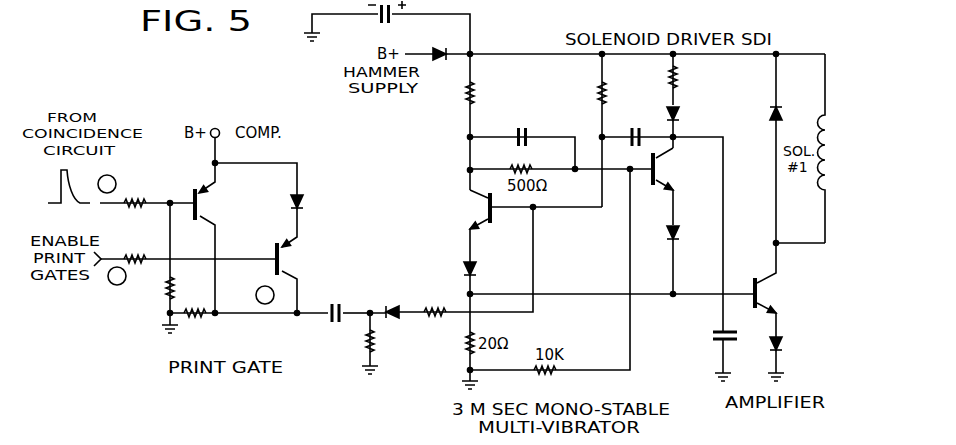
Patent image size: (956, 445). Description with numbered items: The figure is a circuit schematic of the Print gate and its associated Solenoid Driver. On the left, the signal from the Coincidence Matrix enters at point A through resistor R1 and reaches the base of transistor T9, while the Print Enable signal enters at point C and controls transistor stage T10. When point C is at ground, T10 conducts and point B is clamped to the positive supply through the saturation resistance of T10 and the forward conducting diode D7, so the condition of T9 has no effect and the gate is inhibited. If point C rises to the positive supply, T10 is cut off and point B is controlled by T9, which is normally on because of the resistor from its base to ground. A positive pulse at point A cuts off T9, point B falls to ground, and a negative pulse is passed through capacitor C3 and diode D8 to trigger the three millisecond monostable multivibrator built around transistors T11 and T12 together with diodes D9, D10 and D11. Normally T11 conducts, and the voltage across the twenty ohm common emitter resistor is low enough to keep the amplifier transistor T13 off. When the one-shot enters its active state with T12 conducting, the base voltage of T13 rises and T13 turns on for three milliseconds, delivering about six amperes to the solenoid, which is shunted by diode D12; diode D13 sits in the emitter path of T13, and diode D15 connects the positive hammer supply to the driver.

The input resistor R1 is at (135, 191).
The transistor T9 is at (205, 238).
The transistor stage T10 is at (303, 260).
The diode D7 is at (310, 201).
The capacitor C3 is at (347, 323).
The diode D8 is at (451, 262).
The transistor T11 is at (524, 226).
The diode D9 is at (482, 320).
The hammer supply diode D15 is at (437, 45).
The diode D11 is at (691, 127).
The transistor T12 is at (677, 186).
The diode D10 is at (691, 259).
The solenoid diode D12 is at (795, 148).
The transistor T13 is at (785, 290).
The diode D13 is at (794, 355).
The point A is at (107, 184).
The point B is at (265, 295).
The point C is at (117, 276).